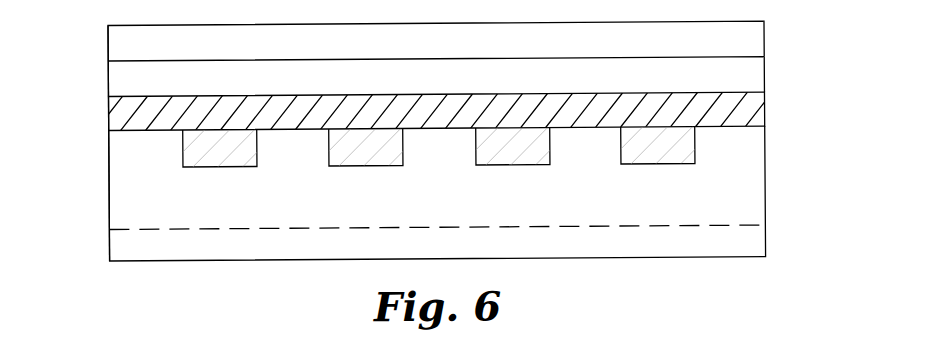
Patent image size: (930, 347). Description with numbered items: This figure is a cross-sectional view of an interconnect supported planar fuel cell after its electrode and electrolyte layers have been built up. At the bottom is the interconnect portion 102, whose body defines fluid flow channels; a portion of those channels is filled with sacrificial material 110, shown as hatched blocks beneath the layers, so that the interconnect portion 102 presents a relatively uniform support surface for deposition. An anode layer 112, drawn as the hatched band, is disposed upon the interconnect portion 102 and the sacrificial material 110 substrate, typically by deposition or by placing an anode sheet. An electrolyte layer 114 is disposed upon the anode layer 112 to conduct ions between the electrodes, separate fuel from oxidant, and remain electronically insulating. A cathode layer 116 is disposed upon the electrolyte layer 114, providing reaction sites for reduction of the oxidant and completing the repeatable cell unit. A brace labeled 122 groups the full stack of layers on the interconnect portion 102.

The interconnect portion 102 is at (662, 203).
The sacrificial material 110 is at (667, 136).
The anode layer 112 is at (756, 108).
The electrolyte layer 114 is at (755, 71).
The cathode layer 116 is at (755, 35).
The substrate stack 122 is at (103, 26).